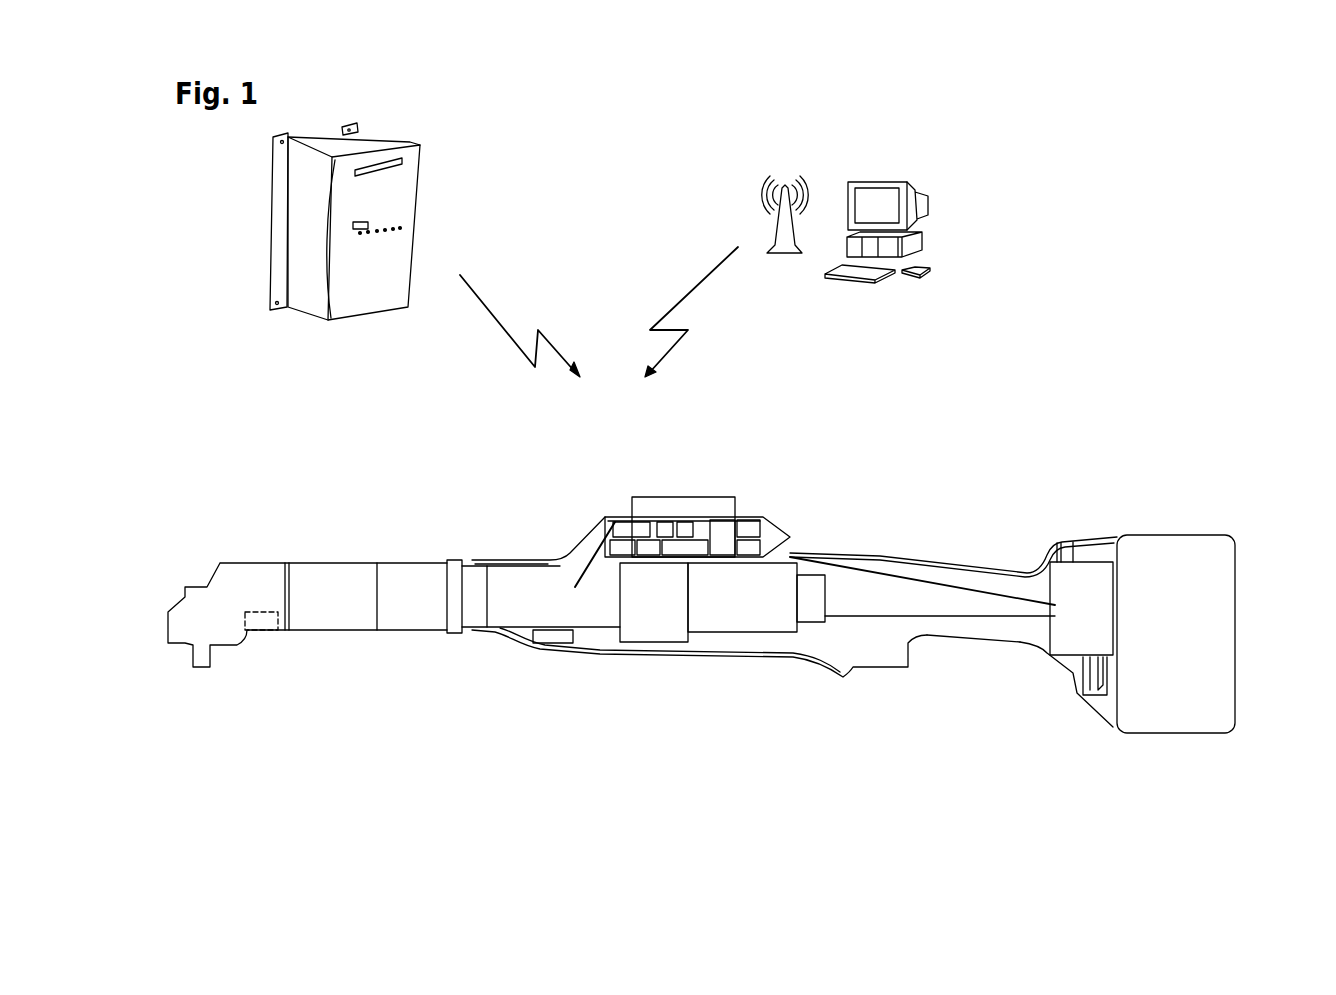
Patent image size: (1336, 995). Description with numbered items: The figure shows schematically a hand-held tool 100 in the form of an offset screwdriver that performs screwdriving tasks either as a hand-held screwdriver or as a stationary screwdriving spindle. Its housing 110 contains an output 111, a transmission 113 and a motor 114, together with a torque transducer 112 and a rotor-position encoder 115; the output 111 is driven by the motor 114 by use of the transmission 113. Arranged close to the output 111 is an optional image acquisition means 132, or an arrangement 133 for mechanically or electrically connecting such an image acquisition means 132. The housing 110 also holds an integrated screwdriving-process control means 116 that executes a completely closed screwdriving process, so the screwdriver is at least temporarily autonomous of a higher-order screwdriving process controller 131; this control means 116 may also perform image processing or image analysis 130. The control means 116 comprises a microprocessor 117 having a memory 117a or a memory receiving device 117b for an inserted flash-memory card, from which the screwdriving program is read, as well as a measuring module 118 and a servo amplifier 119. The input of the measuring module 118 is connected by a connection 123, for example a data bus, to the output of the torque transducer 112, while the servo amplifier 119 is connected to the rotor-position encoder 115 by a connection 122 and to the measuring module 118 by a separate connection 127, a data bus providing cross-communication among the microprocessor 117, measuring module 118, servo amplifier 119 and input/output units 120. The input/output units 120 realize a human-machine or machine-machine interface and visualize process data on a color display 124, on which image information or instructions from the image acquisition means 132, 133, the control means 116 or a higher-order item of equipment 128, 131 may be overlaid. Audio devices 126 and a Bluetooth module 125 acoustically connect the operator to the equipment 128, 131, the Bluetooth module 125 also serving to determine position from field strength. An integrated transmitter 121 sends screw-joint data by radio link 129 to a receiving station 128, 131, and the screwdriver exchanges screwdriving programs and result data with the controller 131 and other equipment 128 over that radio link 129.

The hand-held tool 100 is at (940, 420).
The housing 110 is at (853, 553).
The output 111 is at (297, 587).
The torque transducer 112 is at (497, 587).
The transmission 113 is at (675, 630).
The motor 114 is at (787, 618).
The rotor-position encoder 115 is at (813, 610).
The screwdriving-process control means 116 is at (605, 532).
The microprocessor 117 is at (647, 552).
The memory 117a is at (667, 523).
The memory receiving device 117b is at (687, 527).
The measuring module 118 is at (623, 552).
The servo amplifier 119 is at (1083, 577).
The input/output units 120 is at (672, 552).
The integrated transmitter 121 is at (722, 533).
The connection 122 is at (1002, 630).
The connection 123 is at (575, 583).
The color display 124 is at (703, 560).
The Bluetooth module 125 is at (750, 523).
The audio devices 126 is at (750, 543).
The connection 127 is at (1003, 590).
The item of equipment 128 is at (412, 205).
The radio link 129 is at (493, 312).
The image processing/image analysis 130 is at (620, 527).
The higher-order screwdriving process controller 131 is at (827, 190).
The image acquisition means 132 is at (260, 620).
The arrangement for connecting an image acquisition means 133 is at (547, 633).